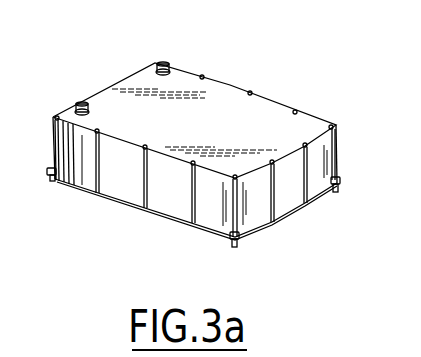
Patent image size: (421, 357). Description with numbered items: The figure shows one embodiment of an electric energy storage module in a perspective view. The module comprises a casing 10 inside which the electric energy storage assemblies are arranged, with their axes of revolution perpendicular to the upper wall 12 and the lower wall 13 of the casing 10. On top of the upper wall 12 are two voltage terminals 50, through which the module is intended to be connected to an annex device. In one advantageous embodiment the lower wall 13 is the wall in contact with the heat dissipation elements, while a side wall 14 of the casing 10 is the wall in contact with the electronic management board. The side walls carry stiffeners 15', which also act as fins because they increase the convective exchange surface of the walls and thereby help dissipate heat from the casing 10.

The casing 10 is at (257, 86).
The upper wall 12 is at (272, 117).
The lower wall 13 is at (210, 234).
The side wall 14 is at (283, 190).
The stiffeners 15' is at (195, 196).
The voltage terminals 50 is at (81, 104).